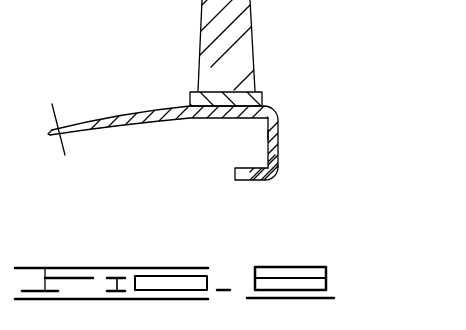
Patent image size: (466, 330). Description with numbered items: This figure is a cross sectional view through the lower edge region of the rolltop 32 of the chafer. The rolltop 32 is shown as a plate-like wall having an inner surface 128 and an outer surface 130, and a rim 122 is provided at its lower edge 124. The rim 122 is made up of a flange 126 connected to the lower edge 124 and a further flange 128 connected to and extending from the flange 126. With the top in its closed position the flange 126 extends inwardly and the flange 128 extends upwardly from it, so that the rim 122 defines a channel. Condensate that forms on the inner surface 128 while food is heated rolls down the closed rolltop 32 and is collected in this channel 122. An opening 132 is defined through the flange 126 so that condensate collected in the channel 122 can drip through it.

The rolltop 32 is at (97, 119).
The rim 122 is at (274, 187).
The lower edge 124 is at (278, 115).
The flange 126 is at (280, 153).
The flange 128 is at (87, 132).
The outer surface 130 is at (163, 107).
The opening 132 is at (268, 135).